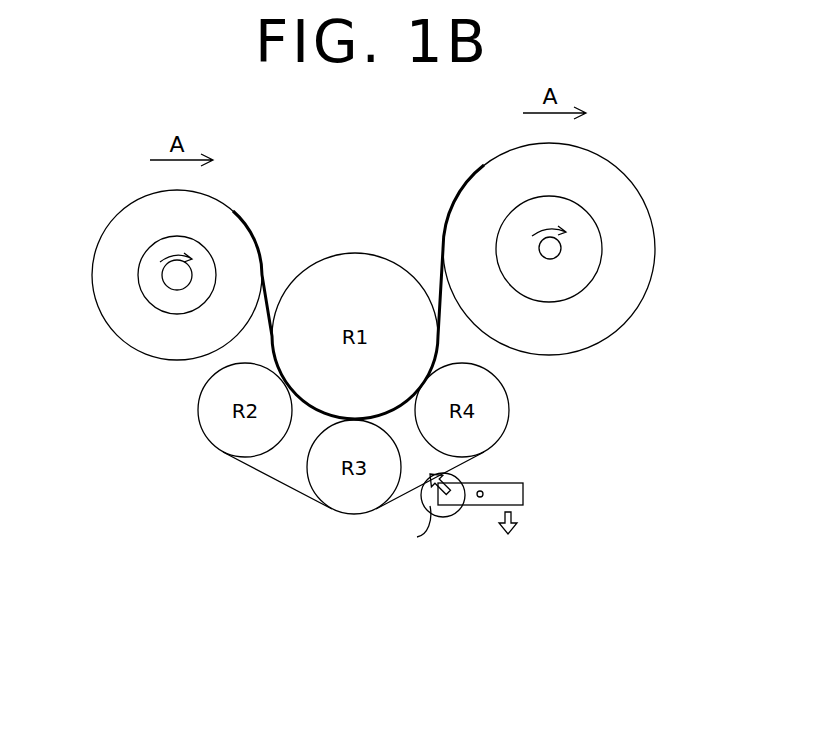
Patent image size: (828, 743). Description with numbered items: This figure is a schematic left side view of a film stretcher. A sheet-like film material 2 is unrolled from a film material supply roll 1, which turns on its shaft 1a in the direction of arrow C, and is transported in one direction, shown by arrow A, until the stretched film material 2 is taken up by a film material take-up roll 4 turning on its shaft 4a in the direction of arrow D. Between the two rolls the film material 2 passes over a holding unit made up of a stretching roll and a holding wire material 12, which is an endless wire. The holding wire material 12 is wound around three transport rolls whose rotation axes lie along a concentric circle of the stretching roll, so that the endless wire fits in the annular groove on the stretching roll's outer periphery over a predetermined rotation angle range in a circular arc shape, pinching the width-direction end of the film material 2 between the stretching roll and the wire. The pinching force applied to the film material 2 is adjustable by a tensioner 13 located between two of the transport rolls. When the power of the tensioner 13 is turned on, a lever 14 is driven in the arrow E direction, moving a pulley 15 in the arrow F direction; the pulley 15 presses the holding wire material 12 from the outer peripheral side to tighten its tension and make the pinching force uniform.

The film material supply roll 1 is at (111, 257).
The shaft of the roll 1a is at (164, 275).
The film material 2 is at (272, 287).
The film material take-up roll 4 is at (637, 213).
The shaft of the roll 4a is at (558, 254).
The holding wire material 12 is at (270, 482).
The tensioner 13 is at (467, 564).
The lever 14 is at (488, 503).
The pulley 15 is at (445, 518).